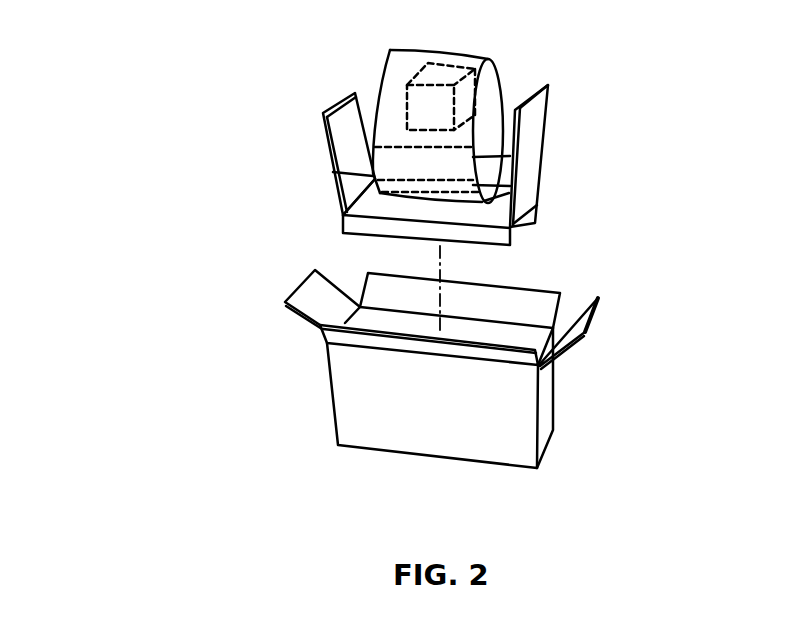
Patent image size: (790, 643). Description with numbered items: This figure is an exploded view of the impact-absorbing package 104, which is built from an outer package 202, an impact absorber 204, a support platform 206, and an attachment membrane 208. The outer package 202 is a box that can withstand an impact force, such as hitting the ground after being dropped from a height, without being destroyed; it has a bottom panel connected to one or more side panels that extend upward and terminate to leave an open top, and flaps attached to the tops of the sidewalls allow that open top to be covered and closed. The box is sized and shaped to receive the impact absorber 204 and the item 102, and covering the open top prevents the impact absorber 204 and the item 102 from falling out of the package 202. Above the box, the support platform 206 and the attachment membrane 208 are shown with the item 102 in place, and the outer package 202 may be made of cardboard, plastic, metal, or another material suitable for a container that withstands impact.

The item 102 is at (420, 72).
The impact-absorbing package 104 is at (144, 163).
The outer package 202 is at (597, 302).
The impact absorber 204 is at (547, 148).
The support platform 206 is at (365, 158).
The attachment membrane 208 is at (500, 63).